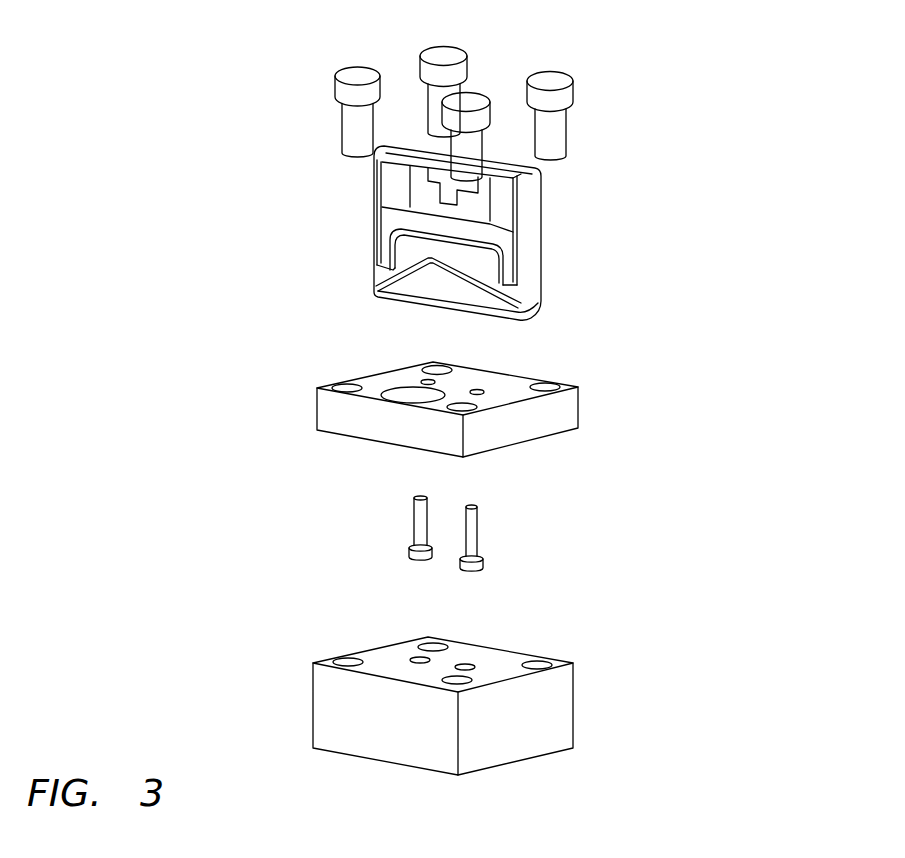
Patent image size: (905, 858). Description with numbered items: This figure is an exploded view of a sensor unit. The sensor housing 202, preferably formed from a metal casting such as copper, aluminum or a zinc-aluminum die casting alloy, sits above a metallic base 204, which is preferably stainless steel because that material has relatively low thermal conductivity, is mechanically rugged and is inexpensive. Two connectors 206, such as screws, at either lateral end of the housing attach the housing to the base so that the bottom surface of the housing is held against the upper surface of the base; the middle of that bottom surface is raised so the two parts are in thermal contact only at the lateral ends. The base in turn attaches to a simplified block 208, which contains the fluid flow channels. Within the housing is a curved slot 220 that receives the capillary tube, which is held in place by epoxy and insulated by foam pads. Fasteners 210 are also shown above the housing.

The sensor housing 202 is at (535, 228).
The base 204 is at (570, 412).
The connectors 206 is at (417, 528).
The block 208 is at (563, 705).
The bolts 210 is at (560, 77).
The curved slot 220 is at (413, 222).